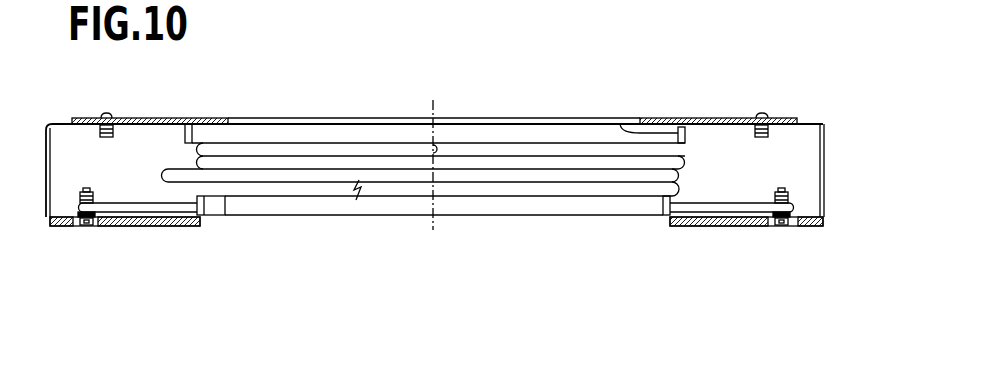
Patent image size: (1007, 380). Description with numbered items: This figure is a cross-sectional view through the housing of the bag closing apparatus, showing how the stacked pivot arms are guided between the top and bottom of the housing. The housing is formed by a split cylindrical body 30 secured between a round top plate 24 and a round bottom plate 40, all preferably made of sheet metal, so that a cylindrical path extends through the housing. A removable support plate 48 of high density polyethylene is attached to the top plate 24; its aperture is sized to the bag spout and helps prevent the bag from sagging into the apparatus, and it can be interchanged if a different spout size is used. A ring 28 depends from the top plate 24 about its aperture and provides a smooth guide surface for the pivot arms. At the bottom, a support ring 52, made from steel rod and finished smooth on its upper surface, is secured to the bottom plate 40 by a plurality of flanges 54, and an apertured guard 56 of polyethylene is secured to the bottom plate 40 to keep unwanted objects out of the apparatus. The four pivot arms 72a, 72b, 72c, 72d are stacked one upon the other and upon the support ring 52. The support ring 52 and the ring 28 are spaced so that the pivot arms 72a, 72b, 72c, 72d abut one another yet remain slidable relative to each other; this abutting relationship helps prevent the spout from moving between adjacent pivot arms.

The top plate 24 is at (810, 117).
The split cylindrical body 30 is at (833, 140).
The removable support plate 48 is at (717, 117).
The ring 28 is at (621, 117).
The pivot arm 72a is at (316, 148).
The pivot arm 72b is at (348, 167).
The pivot arm 72c is at (228, 178).
The pivot arm 72d is at (517, 187).
The support ring 52 is at (475, 210).
The flanges 54 is at (117, 210).
The apertured guard 56 is at (747, 228).
The bottom plate 40 is at (805, 227).